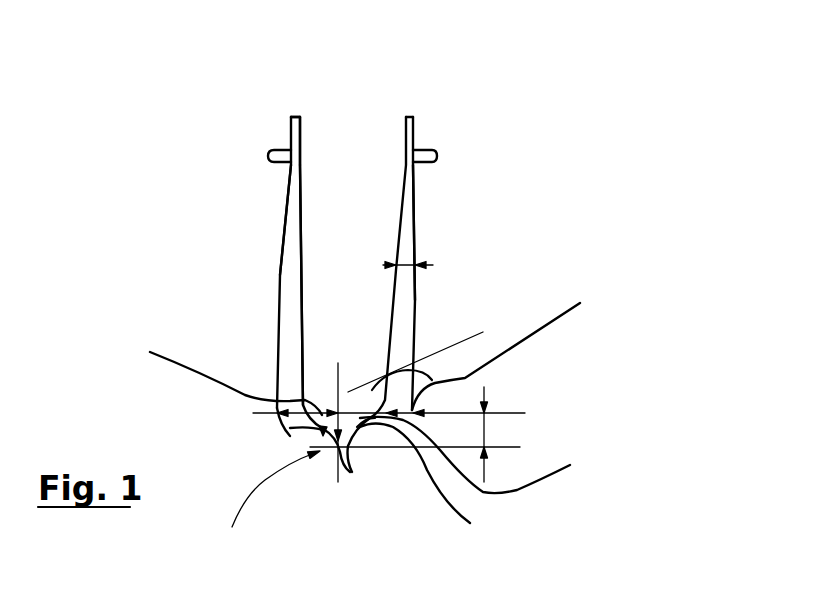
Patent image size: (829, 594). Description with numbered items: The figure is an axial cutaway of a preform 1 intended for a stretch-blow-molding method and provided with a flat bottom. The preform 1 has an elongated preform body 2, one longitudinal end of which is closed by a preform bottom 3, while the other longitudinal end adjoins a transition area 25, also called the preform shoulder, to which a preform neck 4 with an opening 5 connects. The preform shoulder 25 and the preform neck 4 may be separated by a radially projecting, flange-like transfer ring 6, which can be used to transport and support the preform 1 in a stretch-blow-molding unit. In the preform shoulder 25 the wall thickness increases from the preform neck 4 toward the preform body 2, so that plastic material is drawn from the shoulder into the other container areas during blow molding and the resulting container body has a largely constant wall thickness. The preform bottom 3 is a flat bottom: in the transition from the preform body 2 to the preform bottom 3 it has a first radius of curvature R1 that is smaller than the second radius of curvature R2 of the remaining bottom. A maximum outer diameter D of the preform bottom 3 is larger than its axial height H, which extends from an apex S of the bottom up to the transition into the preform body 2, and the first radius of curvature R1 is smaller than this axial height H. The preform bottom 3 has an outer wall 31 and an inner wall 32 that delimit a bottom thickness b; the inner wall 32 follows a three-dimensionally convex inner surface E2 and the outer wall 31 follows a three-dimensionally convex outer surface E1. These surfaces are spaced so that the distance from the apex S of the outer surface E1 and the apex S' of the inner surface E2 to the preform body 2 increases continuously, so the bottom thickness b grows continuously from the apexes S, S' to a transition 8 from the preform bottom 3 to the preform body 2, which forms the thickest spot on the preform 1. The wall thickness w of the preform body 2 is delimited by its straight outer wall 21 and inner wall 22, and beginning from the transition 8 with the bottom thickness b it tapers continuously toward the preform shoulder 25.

The preform 1 is at (168, 230).
The preform body 2 is at (280, 303).
The preform bottom 3 is at (300, 446).
The preform neck 4 is at (291, 130).
The opening 5 is at (334, 130).
The transfer ring 6 is at (268, 156).
The transition 8 is at (516, 342).
The outer wall 21 is at (282, 226).
The inner wall 22 is at (305, 243).
The transition area 25 is at (412, 188).
The outer wall 31 is at (307, 443).
The inner wall 32 is at (441, 485).
The maximum outer diameter D is at (320, 410).
The apex S is at (396, 467).
The apex S' is at (330, 396).
The bottom thickness b is at (258, 501).
The axial height H is at (485, 426).
The wall thickness w is at (441, 263).
The first radius of curvature R1 is at (443, 336).
The second radius of curvature R2 is at (386, 469).
The outer surface E1 is at (491, 455).
The inner surface E2 is at (214, 362).